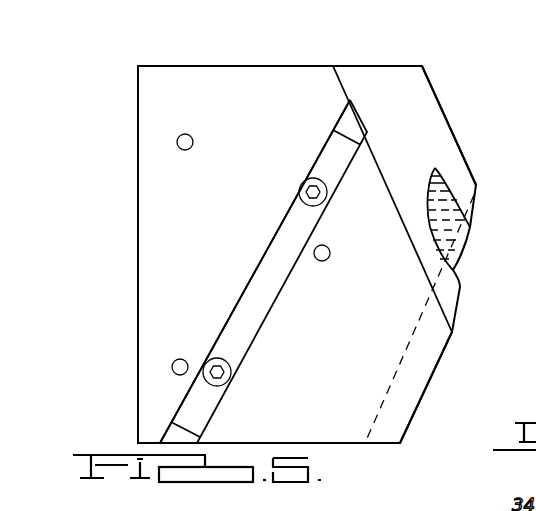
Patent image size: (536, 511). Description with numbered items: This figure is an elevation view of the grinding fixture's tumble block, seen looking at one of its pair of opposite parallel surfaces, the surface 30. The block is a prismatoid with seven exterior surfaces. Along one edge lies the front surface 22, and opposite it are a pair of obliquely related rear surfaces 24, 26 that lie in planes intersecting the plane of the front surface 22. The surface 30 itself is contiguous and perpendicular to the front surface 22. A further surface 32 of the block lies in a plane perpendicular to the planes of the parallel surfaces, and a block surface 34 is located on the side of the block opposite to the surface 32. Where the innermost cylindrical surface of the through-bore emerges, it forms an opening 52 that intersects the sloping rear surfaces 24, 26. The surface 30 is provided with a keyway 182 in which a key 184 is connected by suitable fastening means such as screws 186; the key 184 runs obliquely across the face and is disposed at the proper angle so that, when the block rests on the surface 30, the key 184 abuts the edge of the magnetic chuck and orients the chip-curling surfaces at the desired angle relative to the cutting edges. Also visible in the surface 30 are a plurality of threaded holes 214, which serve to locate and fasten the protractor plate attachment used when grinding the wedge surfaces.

The front surface 22 is at (138, 250).
The rear surface 24 is at (427, 388).
The rear surface 26 is at (432, 132).
The parallel surface 30 is at (242, 77).
The surface 32 is at (303, 67).
The block surface 34 is at (236, 446).
The opening 52 is at (440, 230).
The keyway 182 is at (281, 233).
The key 184 is at (250, 315).
The screws 186 is at (320, 200).
The threaded holes 214 is at (191, 137).